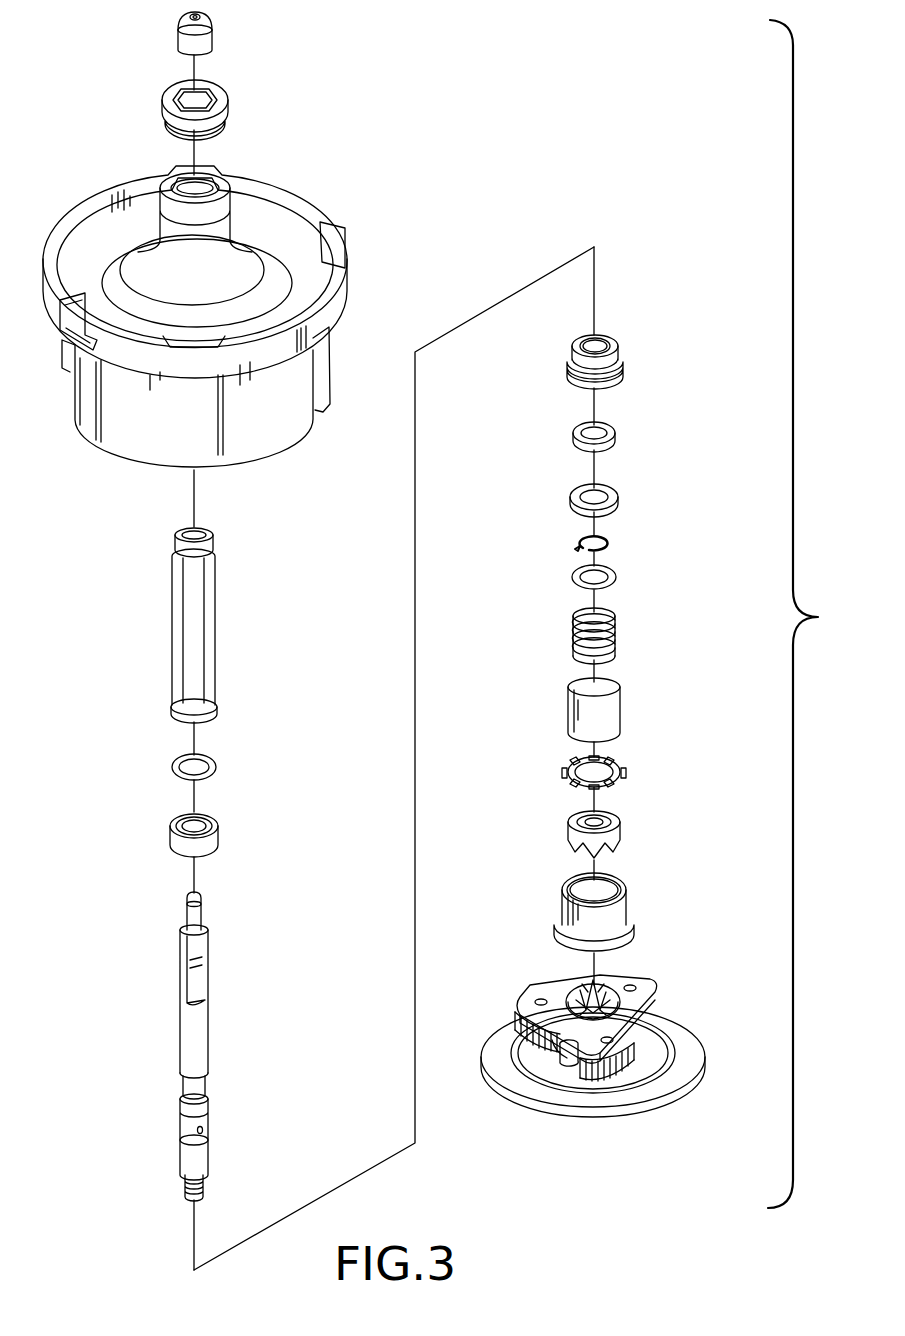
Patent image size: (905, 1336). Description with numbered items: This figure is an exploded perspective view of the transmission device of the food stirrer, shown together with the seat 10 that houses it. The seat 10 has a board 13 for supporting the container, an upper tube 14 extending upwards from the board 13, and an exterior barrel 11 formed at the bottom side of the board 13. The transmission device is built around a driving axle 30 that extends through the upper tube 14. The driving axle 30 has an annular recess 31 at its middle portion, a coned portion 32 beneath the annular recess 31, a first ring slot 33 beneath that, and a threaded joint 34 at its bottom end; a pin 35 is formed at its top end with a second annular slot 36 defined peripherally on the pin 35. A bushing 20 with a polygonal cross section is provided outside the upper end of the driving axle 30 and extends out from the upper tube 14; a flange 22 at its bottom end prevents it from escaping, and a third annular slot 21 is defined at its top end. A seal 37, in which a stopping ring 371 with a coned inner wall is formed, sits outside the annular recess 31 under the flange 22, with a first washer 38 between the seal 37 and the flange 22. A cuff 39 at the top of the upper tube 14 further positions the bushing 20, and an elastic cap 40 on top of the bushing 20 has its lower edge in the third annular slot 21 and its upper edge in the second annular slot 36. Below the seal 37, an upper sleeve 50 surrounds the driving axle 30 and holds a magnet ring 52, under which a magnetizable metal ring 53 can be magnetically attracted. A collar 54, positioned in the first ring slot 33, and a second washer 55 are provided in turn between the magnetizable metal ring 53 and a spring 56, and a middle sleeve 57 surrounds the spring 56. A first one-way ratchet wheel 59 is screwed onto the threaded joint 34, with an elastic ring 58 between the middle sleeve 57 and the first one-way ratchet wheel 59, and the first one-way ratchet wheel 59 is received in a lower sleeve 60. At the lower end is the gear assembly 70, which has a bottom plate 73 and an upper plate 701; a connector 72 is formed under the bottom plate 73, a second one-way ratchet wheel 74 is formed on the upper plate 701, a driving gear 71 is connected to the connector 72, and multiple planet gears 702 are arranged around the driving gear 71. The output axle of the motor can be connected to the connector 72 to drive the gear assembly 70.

The seat 10 is at (130, 452).
The exterior barrel 11 is at (282, 425).
The board 13 is at (292, 255).
The upper tube 14 is at (222, 225).
The bushing 20 is at (226, 631).
The third annular slot 21 is at (212, 553).
The flange 22 is at (217, 712).
The driving axle 30 is at (196, 1046).
The annular recess 31 is at (185, 1085).
The coned portion 32 is at (207, 1101).
The first ring slot 33 is at (188, 1139).
The threaded joint 34 is at (204, 1189).
The pin 35 is at (190, 918).
The second annular slot 36 is at (201, 906).
The seal 37 is at (189, 826).
The stopping ring 371 is at (180, 817).
The first washer 38 is at (217, 767).
The cuff 39 is at (226, 110).
The elastic cap 40 is at (208, 40).
The upper sleeve 50 is at (622, 355).
The magnet ring 52 is at (616, 432).
The magnetizable metal ring 53 is at (619, 497).
The collar 54 is at (606, 546).
The second washer 55 is at (580, 576).
The spring 56 is at (575, 637).
The middle sleeve 57 is at (575, 710).
The elastic ring 58 is at (620, 768).
The first one-way ratchet wheel 59 is at (619, 825).
The lower sleeve 60 is at (619, 908).
The gear assembly 70 is at (530, 958).
The driving gear 71 is at (564, 1067).
The connector 72 is at (550, 1058).
The bottom plate 73 is at (683, 1072).
The second one-way ratchet wheel 74 is at (612, 985).
The upper plate 701 is at (636, 1015).
The planet gears 702 is at (624, 1070).